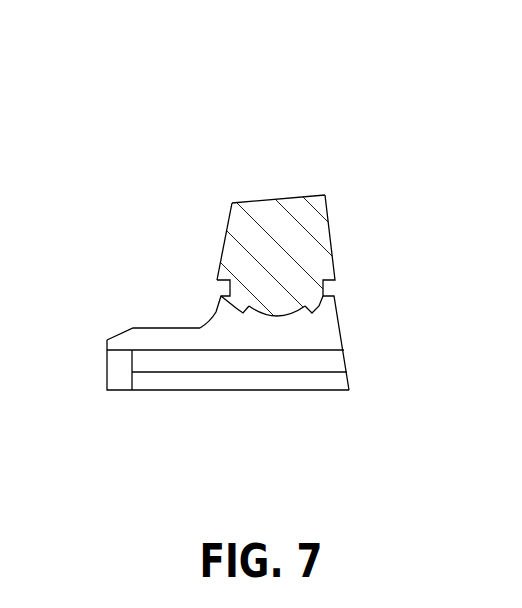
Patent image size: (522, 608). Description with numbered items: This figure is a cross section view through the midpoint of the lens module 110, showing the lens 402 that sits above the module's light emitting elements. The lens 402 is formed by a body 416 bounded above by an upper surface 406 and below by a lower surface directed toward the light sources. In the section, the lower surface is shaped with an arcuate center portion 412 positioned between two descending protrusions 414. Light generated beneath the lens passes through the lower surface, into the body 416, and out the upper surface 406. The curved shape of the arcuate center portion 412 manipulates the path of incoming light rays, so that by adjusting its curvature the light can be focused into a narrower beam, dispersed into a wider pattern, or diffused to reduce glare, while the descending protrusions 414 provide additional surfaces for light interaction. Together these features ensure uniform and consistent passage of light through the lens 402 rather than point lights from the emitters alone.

The lens module 110 is at (104, 84).
The lens 402 is at (303, 255).
The upper surface 406 is at (292, 195).
The arcuate center portion 412 is at (281, 318).
The descending protrusions 414 is at (240, 311).
The body 416 is at (227, 222).